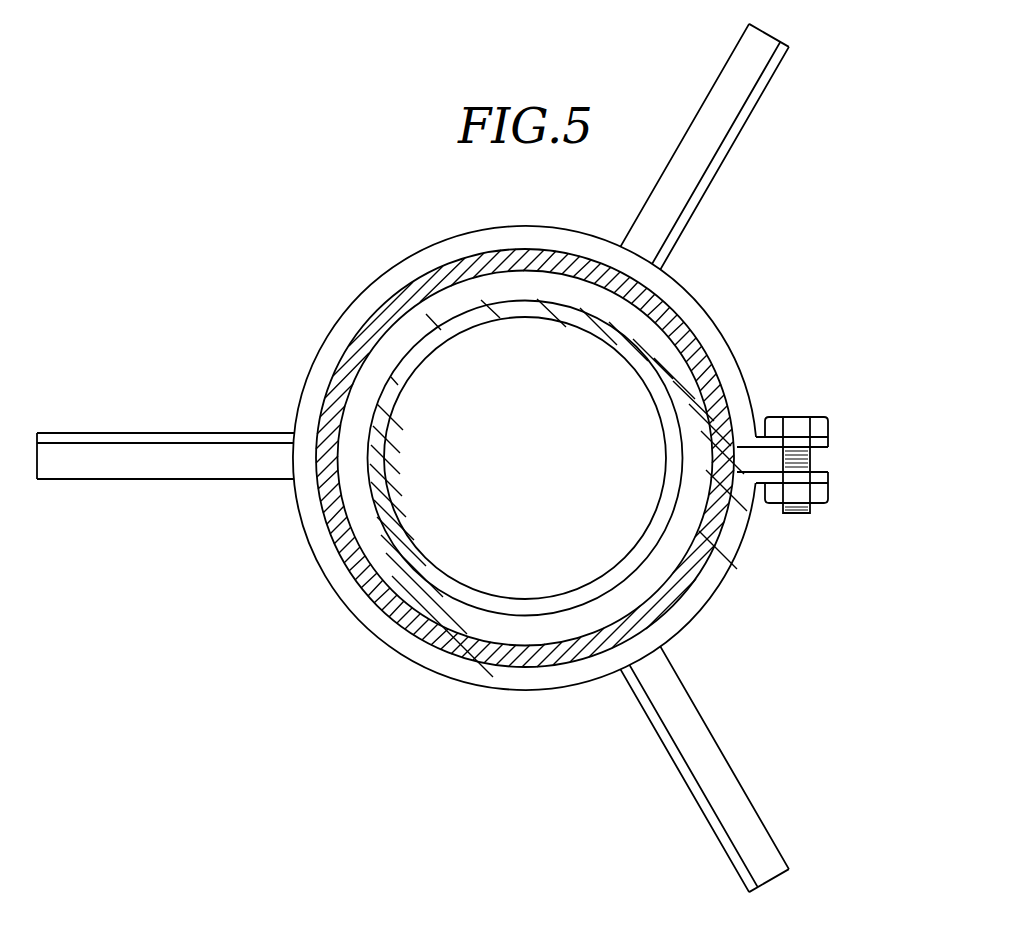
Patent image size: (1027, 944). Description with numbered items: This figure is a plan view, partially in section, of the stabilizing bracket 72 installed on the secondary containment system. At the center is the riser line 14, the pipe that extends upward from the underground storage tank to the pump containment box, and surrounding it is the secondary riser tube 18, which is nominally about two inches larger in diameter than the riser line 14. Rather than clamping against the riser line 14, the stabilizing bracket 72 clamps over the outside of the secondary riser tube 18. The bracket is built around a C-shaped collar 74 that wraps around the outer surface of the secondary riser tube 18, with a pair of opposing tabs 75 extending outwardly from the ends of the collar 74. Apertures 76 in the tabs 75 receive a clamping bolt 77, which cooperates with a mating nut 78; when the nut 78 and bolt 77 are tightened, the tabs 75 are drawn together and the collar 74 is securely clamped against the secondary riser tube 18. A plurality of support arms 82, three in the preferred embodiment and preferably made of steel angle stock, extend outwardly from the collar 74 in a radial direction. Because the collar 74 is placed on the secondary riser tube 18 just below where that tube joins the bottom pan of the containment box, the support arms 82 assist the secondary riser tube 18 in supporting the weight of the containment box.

The riser line 14 is at (637, 576).
The secondary riser tube 18 is at (707, 363).
The stabilizing bracket 72 is at (553, 458).
The C-shaped collar 74 is at (688, 302).
The opposing tabs 75 is at (823, 440).
The apertures 76 is at (803, 437).
The clamping bolt 77 is at (793, 417).
The mating nut 78 is at (795, 500).
The support arms 82 is at (708, 137).